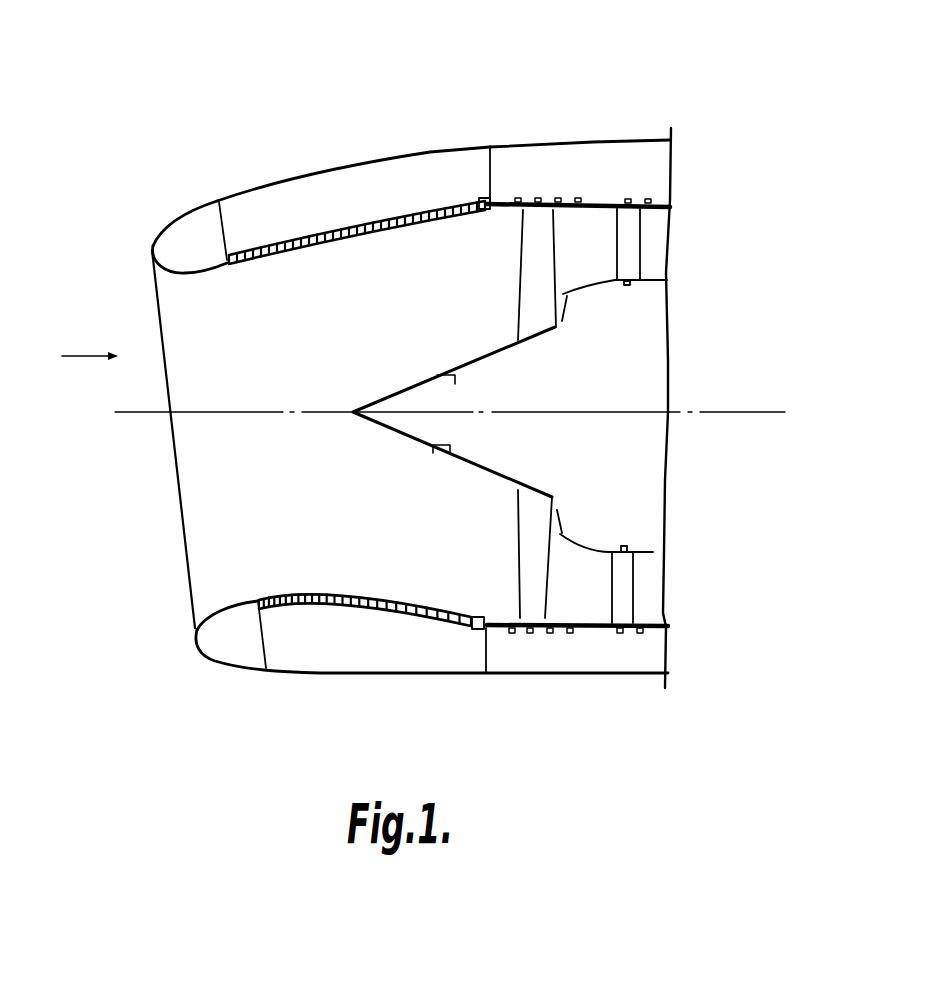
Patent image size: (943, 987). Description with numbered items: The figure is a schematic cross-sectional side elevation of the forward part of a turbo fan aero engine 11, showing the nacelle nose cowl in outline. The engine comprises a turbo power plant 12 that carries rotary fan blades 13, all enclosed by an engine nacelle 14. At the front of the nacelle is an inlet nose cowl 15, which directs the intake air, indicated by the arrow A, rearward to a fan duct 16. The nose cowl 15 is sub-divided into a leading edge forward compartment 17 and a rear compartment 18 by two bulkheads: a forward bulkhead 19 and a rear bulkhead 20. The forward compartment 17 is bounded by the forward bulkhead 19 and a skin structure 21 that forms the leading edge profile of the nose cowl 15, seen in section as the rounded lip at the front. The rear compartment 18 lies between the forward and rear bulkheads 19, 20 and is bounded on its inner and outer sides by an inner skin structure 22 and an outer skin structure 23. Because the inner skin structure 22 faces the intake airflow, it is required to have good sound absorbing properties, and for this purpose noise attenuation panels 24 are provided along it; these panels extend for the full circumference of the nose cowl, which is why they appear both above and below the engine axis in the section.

The aero engine 11 is at (494, 43).
The turbo power plant 12 is at (497, 462).
The rotary fan blades 13 is at (525, 266).
The engine nacelle 14 is at (600, 130).
The inlet nose cowl 15 is at (281, 172).
The fan duct 16 is at (598, 245).
The leading edge forward compartment 17 is at (190, 228).
The rear compartment 18 is at (329, 195).
The forward bulkhead 19 is at (222, 237).
The rear bulkhead 20 is at (495, 178).
The skin structure 21 is at (152, 250).
The inner skin structure 22 is at (300, 253).
The outer skin structure 23 is at (377, 162).
The noise attenuation panels 24 is at (353, 234).
The airflow direction A is at (78, 358).